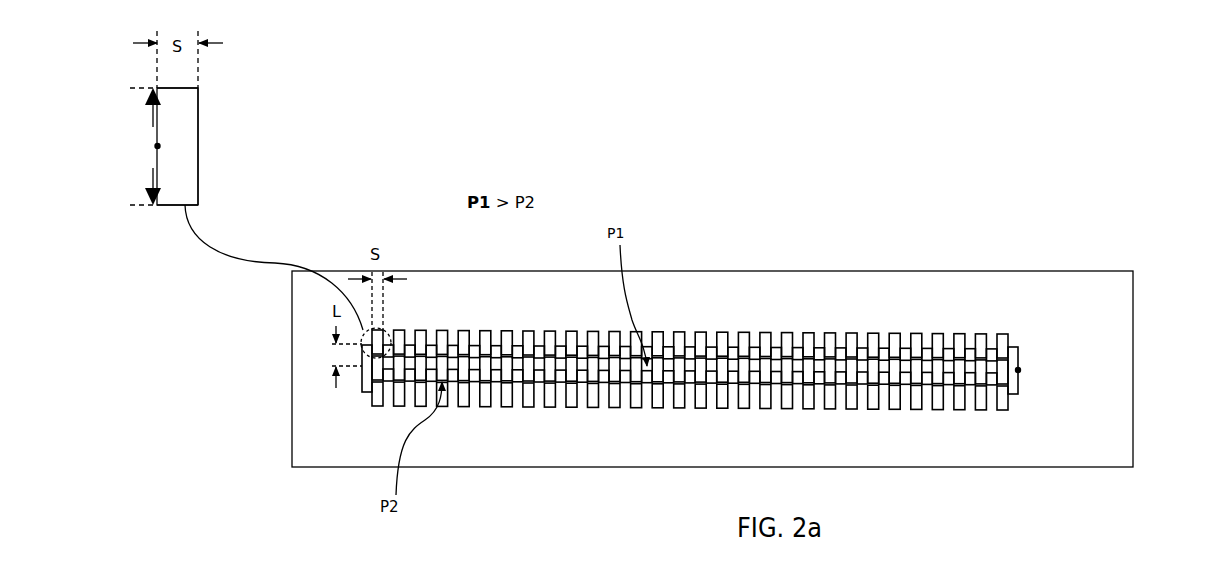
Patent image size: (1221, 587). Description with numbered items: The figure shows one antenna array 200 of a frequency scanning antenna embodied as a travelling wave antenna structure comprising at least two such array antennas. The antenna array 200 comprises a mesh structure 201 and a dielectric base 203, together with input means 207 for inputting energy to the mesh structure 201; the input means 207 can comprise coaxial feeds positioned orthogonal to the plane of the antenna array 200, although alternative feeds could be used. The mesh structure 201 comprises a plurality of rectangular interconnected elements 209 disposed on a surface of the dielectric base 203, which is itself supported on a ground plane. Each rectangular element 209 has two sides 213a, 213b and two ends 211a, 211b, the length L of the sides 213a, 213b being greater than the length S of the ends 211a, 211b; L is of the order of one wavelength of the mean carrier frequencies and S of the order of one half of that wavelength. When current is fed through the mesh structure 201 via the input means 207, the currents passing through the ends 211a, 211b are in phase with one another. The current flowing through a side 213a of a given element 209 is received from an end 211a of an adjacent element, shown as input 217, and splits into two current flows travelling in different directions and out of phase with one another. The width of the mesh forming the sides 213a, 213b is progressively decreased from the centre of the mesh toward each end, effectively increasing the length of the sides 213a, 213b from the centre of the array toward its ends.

The antenna array 200 is at (690, 374).
The mesh structure 201 is at (782, 333).
The dielectric base 203 is at (1077, 293).
The input means 207 is at (1018, 370).
The rectangular element 209 is at (177, 146).
The end of rectangular element 211a is at (177, 206).
The end of rectangular element 211b is at (162, 87).
The side of rectangular element 213a is at (157, 117).
The side of rectangular element 213b is at (198, 146).
The input 217 is at (156, 146).